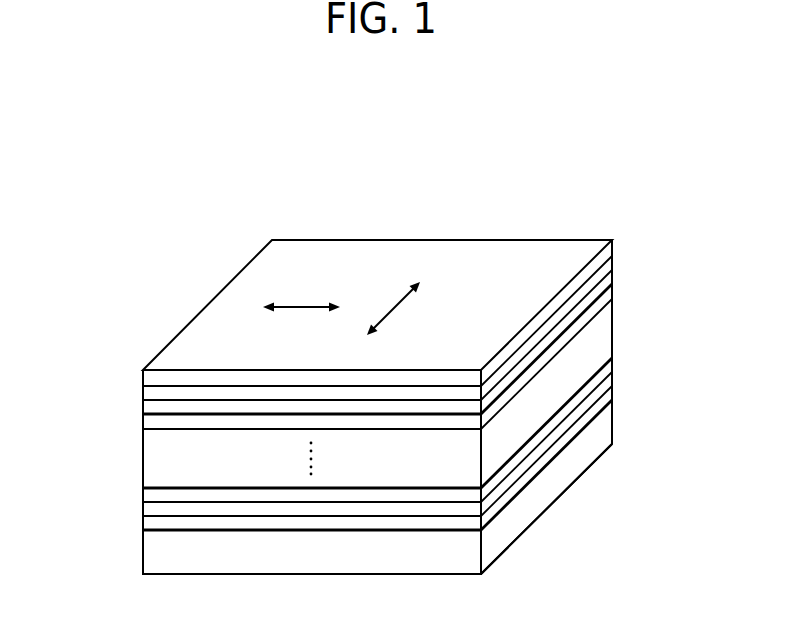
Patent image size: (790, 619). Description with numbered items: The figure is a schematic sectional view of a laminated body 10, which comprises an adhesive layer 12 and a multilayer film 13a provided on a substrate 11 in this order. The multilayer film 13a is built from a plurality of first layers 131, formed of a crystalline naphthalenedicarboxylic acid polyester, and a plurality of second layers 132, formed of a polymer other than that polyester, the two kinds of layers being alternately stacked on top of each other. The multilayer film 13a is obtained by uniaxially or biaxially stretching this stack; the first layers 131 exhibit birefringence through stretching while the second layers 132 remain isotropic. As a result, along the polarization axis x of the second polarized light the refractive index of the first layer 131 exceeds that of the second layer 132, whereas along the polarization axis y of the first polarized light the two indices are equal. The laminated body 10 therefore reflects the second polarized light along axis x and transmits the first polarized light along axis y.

The laminated body 10 is at (563, 201).
The substrate 11 is at (608, 424).
The adhesive layer 12 is at (608, 395).
The multilayer film 13a is at (371, 393).
The first layer 131 is at (151, 377).
The second layer 132 is at (151, 392).